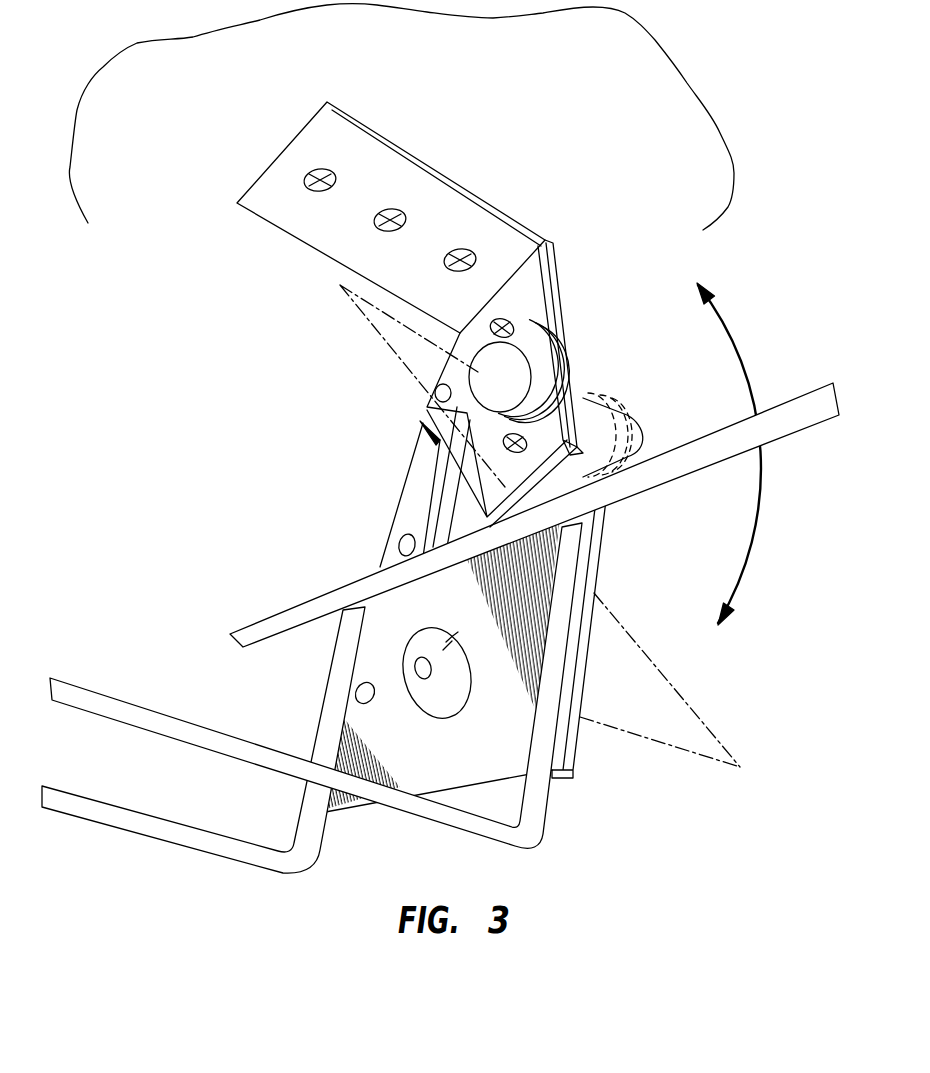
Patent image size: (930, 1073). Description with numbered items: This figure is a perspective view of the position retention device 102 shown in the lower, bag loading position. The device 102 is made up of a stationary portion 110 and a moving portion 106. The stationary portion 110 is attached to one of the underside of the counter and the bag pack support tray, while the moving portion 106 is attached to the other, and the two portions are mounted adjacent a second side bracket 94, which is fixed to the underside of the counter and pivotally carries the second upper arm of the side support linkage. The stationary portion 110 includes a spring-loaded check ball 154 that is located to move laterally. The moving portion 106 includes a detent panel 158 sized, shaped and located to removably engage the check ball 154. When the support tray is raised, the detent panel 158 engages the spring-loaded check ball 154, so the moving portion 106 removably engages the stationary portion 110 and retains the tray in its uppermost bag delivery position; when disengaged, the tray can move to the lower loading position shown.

The second side bracket 94 is at (350, 147).
The position retention device 102 is at (488, 362).
The spring-loaded check ball 154 is at (478, 382).
The stationary portion 110 is at (618, 427).
The detent panel 158 is at (497, 590).
The moving portion 106 is at (402, 642).